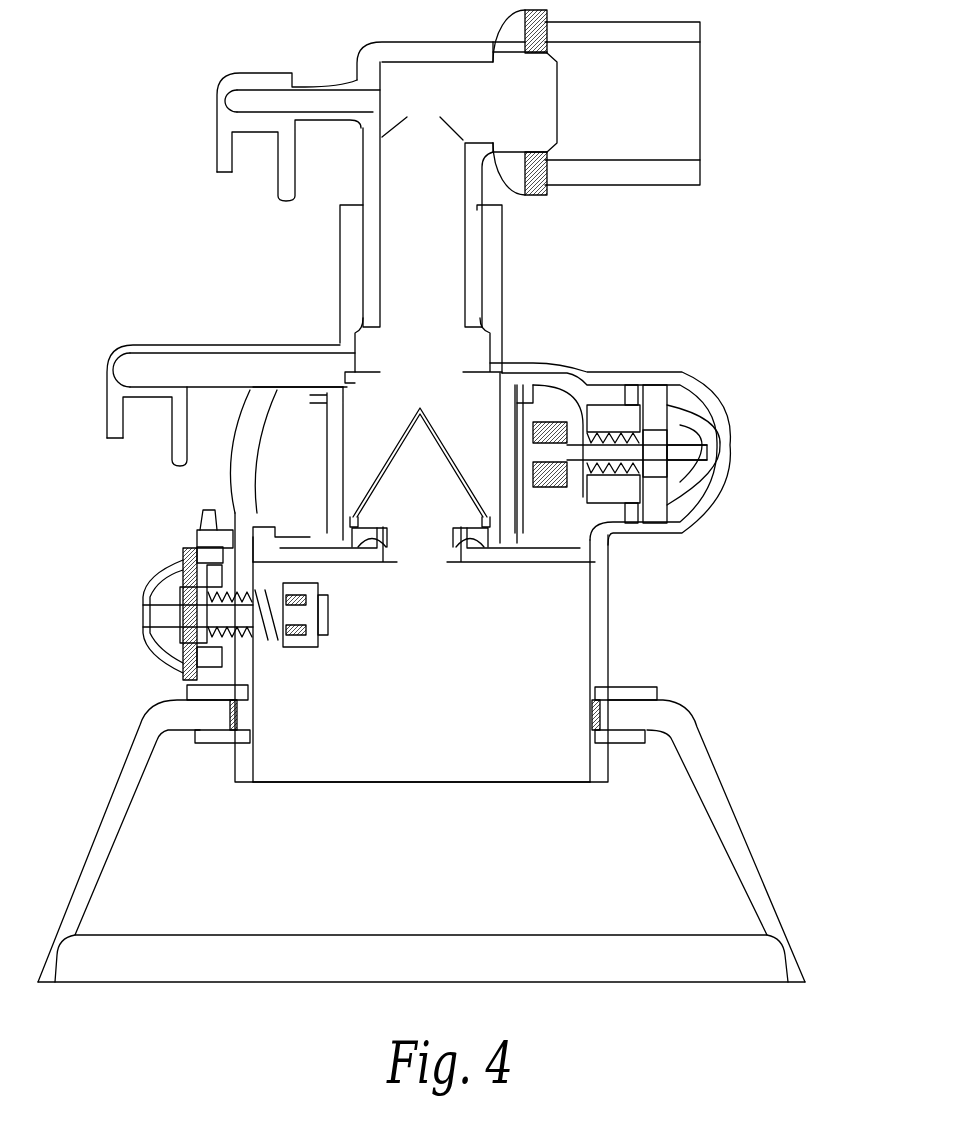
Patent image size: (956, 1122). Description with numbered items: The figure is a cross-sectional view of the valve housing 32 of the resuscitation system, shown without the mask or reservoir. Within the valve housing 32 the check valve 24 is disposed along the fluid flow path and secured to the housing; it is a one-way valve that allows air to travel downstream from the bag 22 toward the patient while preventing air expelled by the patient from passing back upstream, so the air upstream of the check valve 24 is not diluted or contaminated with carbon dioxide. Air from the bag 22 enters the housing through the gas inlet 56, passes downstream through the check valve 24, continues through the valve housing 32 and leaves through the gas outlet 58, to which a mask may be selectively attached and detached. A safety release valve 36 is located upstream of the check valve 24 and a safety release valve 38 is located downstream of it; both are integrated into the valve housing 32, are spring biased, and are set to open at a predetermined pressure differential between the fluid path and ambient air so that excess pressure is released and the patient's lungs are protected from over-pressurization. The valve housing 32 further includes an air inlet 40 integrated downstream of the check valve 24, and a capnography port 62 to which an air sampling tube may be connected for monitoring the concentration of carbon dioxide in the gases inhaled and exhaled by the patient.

The bag 22 is at (745, 848).
The check valve 24 is at (450, 442).
The valve housing 32 is at (600, 618).
The safety release valve 36 is at (163, 582).
The safety release valve 38 is at (713, 410).
The air inlet 40 is at (214, 370).
The gas inlet 56 is at (381, 758).
The gas outlet 58 is at (664, 103).
The capnography port 62 is at (254, 104).